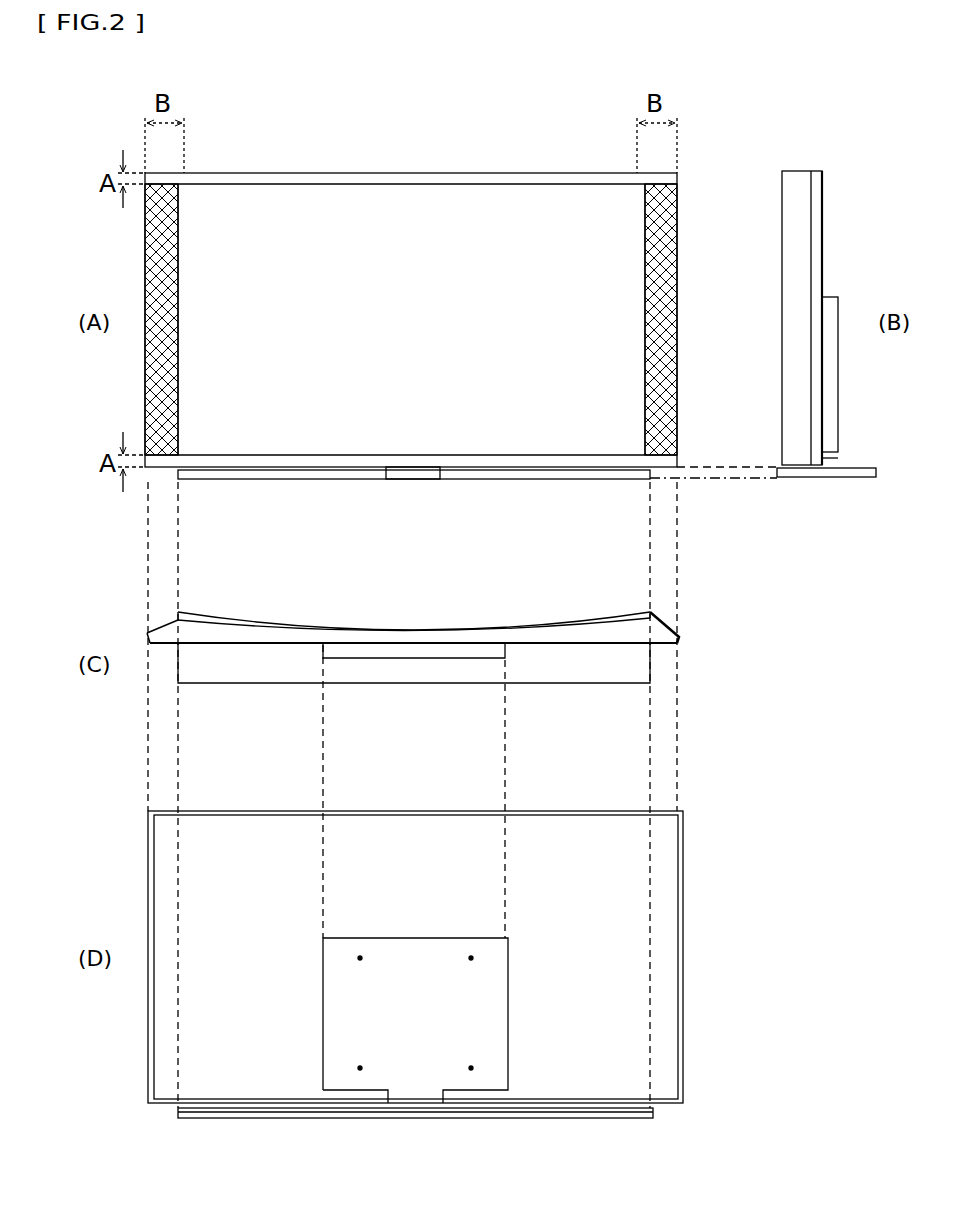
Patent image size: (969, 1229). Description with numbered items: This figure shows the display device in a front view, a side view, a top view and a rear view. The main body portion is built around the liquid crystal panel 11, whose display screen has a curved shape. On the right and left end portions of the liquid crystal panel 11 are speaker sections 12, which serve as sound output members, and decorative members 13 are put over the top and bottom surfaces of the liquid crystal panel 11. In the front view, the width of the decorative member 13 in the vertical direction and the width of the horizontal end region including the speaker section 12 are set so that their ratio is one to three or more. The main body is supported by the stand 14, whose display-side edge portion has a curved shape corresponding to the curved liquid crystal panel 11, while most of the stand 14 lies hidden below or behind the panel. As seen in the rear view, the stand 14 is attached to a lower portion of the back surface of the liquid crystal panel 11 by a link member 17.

The liquid crystal panel 11 is at (530, 205).
The speaker section 12 is at (155, 255).
The decorative member 13 is at (420, 173).
The stand 14 is at (593, 480).
The link member 17 is at (452, 1100).